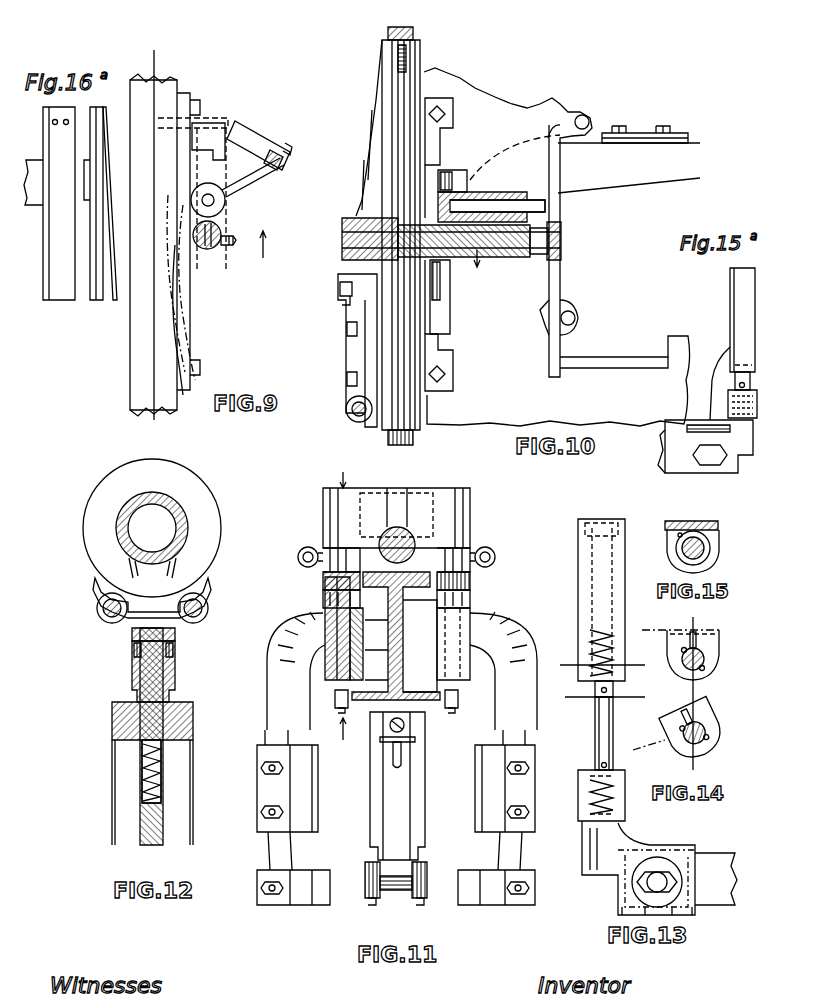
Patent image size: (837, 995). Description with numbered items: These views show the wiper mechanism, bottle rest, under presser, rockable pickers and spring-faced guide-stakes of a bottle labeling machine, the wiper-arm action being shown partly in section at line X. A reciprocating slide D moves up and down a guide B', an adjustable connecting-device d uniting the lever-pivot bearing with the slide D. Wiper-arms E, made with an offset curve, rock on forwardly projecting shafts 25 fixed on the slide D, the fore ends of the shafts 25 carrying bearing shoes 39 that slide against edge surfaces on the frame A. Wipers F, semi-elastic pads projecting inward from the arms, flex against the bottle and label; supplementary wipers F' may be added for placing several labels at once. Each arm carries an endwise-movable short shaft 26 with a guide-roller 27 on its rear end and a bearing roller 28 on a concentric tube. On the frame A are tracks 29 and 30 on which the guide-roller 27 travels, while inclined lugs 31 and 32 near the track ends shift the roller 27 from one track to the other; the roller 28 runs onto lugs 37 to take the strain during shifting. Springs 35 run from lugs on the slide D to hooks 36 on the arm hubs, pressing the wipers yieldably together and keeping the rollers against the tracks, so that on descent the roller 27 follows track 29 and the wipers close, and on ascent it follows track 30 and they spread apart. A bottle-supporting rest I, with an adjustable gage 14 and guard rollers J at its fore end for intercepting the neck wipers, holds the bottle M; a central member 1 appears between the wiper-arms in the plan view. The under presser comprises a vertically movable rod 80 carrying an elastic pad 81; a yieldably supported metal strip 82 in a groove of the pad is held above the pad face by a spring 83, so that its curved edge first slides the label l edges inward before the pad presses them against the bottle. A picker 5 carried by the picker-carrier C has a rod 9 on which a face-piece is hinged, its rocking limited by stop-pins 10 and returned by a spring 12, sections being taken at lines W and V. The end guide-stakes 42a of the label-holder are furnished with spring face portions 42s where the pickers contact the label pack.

In FIG. 11, the slide 1 is at (397, 786).
In FIG. 15A, the pickers 5 is at (728, 299).
In FIG. 13, the pickers 5 is at (580, 594).
In FIG. 15, the pickers 5 is at (700, 521).
In FIG. 14, the pickers 5 is at (719, 636).
In FIG. 15A, the axis or rod 9 is at (750, 384).
In FIG. 13, the axis or rod 9 is at (597, 738).
In FIG. 15, the axis or rod 9 is at (710, 548).
In FIG. 14, the axis or rod 9 is at (705, 660).
In FIG. 13, the stop-pins 10 is at (594, 690).
In FIG. 14, the stop-pins 10 is at (703, 720).
In FIG. 13, the spring 12 is at (614, 650).
In FIG. 15, the spring 12 is at (705, 555).
In FIG. 11, the gage or stop 14 is at (410, 738).
In FIG. 9, the axes or shafts 25 is at (212, 246).
In FIG. 10, the axes or shafts 25 is at (346, 241).
In FIG. 10, the short shaft 26 is at (530, 206).
In FIG. 11, the short shaft 26 is at (338, 645).
In FIG. 9, the guide-roller 27 is at (214, 200).
In FIG. 10, the guide-roller 27 is at (458, 180).
In FIG. 11, the guide-roller 27 is at (323, 585).
In FIG. 10, the bearing roller 28 is at (478, 190).
In FIG. 11, the bearing roller 28 is at (323, 604).
In FIG. 9, the track or guide-way 29 is at (185, 265).
In FIG. 10, the track or guide-way 29 is at (445, 278).
In FIG. 11, the track or guide-way 29 is at (370, 606).
In FIG. 9, the track 30 is at (167, 277).
In FIG. 10, the track 30 is at (432, 282).
In FIG. 11, the track 30 is at (372, 564).
In FIG. 10, the inclined lug 31 is at (548, 320).
In FIG. 11, the inclined lug 31 is at (355, 706).
In FIG. 9, the inclined lug 32 is at (205, 148).
In FIG. 10, the inclined lug 32 is at (427, 166).
In FIG. 11, the springs 35 is at (306, 547).
In FIG. 9, the hooks 36 is at (238, 243).
In FIG. 11, the hooks 36 is at (298, 556).
In FIG. 10, the facets or lugs 37 is at (446, 160).
In FIG. 10, the bearing shoes 39 is at (556, 256).
In FIG. 11, the bearing shoes 39 is at (456, 708).
In FIG. 16A, the guide stakes 42a is at (95, 262).
In FIG. 16A, the spring face portions 42s is at (118, 145).
In FIG. 12, the vertically movable rod or member 80 is at (148, 822).
In FIG. 12, the elastic presser-pad 81 is at (171, 652).
In FIG. 12, the metal strip 82 is at (132, 634).
In FIG. 12, the spring 83 is at (142, 768).
In FIG. 9, the frame A is at (137, 280).
In FIG. 10, the frame A is at (557, 247).
In FIG. 11, the frame A is at (402, 609).
In FIG. 12, the frame A is at (178, 795).
In FIG. 10, the guide B' is at (421, 448).
In FIG. 11, the guide B' is at (423, 488).
In FIG. 15A, the picker-carrier C is at (680, 442).
In FIG. 13, the picker-carrier C is at (659, 868).
In FIG. 10, the reciprocating slide D is at (396, 180).
In FIG. 11, the reciprocating slide D is at (391, 537).
In FIG. 9, the wiper-arms E is at (253, 180).
In FIG. 10, the wiper-arms E is at (495, 266).
In FIG. 11, the wiper-arms E is at (395, 782).
In FIG. 10, the lever E' is at (620, 251).
In FIG. 9, the wipers F is at (259, 133).
In FIG. 10, the wipers F is at (645, 125).
In FIG. 11, the wipers F is at (396, 788).
In FIG. 11, the supplementary wipers F' is at (396, 897).
In FIG. 12, the bottle-supporting rest I is at (95, 588).
In FIG. 11, the guard rollers J is at (368, 897).
In FIG. 12, the guard rollers J is at (100, 620).
In FIG. 12, the bottle M is at (152, 528).
In FIG. 13, the section line V is at (596, 665).
In FIG. 13, the section line W is at (595, 697).
In FIG. 11, the section line X X is at (340, 606).
In FIG. 10, the adjustable connecting-device d is at (365, 300).
In FIG. 12, the label l is at (156, 567).
In FIG. 14, the label l is at (677, 690).